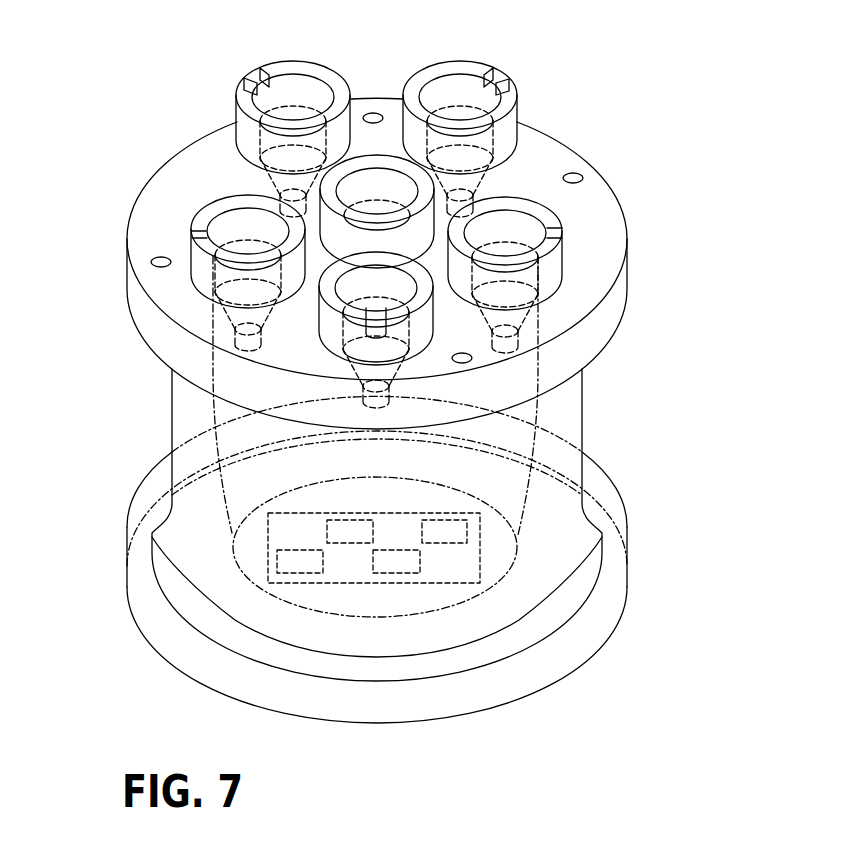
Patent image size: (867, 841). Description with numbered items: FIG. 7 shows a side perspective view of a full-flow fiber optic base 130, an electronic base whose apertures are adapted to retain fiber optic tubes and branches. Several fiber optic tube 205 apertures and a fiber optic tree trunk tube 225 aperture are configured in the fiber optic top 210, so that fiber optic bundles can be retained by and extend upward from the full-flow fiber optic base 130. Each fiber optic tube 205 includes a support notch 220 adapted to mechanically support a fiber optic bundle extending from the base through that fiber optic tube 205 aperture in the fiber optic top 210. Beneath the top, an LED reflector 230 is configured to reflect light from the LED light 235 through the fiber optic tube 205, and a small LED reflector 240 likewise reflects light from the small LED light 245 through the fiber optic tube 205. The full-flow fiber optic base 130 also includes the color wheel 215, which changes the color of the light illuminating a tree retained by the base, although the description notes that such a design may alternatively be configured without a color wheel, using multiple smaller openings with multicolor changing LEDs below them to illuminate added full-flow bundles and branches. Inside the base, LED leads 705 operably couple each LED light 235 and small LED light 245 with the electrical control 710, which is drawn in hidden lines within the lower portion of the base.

The full-flow fiber optic base 130 is at (583, 434).
The fiber optic tube 205 is at (321, 64).
The fiber optic top 210 is at (152, 176).
The color wheel 215 is at (280, 327).
The support notch 220 is at (350, 328).
The fiber optic tree trunk tube 225 is at (383, 183).
The LED reflector 230 is at (373, 258).
The LED light 235 is at (347, 287).
The small LED reflector 240 is at (515, 350).
The small LED light 245 is at (583, 369).
The LED leads 705 is at (233, 523).
The electrical control 710 is at (481, 552).